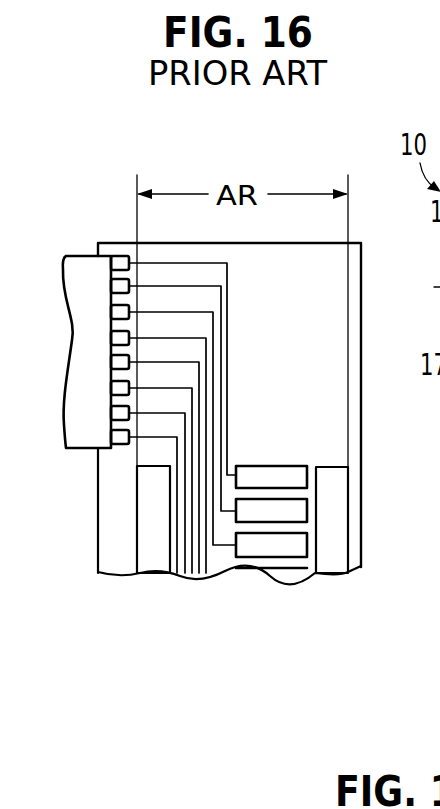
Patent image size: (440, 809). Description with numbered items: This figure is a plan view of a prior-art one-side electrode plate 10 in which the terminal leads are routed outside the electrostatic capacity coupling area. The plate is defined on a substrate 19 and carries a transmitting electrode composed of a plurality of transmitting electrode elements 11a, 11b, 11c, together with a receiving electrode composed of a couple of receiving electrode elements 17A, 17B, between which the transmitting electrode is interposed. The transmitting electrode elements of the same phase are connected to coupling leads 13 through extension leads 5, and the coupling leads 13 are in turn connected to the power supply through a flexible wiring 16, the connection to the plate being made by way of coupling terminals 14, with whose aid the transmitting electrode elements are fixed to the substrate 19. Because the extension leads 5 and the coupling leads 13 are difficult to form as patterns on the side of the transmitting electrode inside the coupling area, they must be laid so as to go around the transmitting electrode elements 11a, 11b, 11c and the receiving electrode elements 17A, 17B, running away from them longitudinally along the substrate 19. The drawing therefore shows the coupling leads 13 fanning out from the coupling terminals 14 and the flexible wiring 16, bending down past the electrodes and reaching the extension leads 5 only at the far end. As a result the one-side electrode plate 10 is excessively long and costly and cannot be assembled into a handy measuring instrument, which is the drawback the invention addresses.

The one-side electrode plate 10 is at (100, 195).
The coupling terminals 14 is at (79, 254).
The flexible wiring 16 is at (73, 391).
The substrate 19 is at (110, 473).
The receiving electrode element 17A is at (150, 518).
The receiving electrode element 17B is at (329, 466).
The transmitting electrode element 11a is at (303, 472).
The transmitting electrode element 11b is at (303, 505).
The transmitting electrode element 11c is at (303, 542).
The coupling leads 13 is at (180, 571).
The extension leads 5 is at (235, 574).